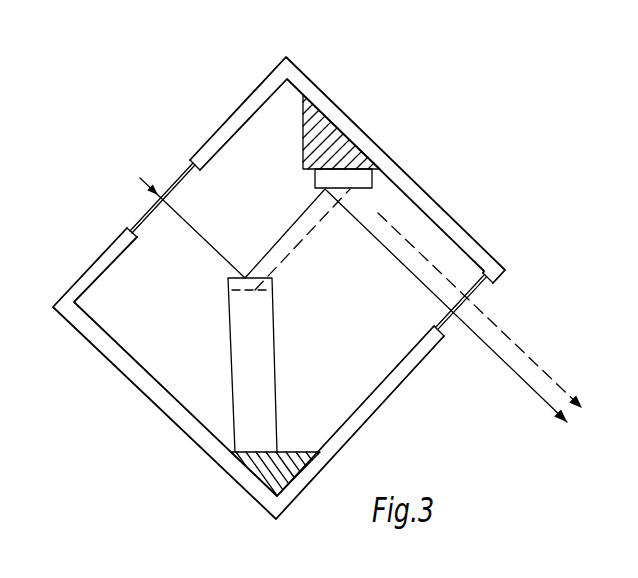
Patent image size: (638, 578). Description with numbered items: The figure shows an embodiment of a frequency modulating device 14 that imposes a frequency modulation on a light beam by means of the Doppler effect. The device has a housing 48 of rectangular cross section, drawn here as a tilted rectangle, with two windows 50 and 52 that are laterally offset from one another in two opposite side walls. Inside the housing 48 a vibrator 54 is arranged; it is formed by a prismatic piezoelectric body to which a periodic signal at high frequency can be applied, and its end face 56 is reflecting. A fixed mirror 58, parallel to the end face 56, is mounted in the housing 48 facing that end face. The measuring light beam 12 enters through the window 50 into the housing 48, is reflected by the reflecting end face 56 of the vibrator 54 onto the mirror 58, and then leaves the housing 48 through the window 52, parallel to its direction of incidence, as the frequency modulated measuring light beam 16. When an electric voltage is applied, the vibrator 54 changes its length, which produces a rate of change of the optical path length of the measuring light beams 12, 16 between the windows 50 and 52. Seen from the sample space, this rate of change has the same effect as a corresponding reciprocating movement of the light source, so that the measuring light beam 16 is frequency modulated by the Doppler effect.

The measuring light beam 12 is at (199, 230).
The frequency modulating device 14 is at (367, 96).
The frequency modulated measuring light beam 16 is at (531, 385).
The housing 48 is at (84, 276).
The window 50 is at (137, 222).
The window 52 is at (480, 293).
The vibrator 54 is at (260, 382).
The end face 56 is at (238, 277).
The fixed mirror 58 is at (365, 171).